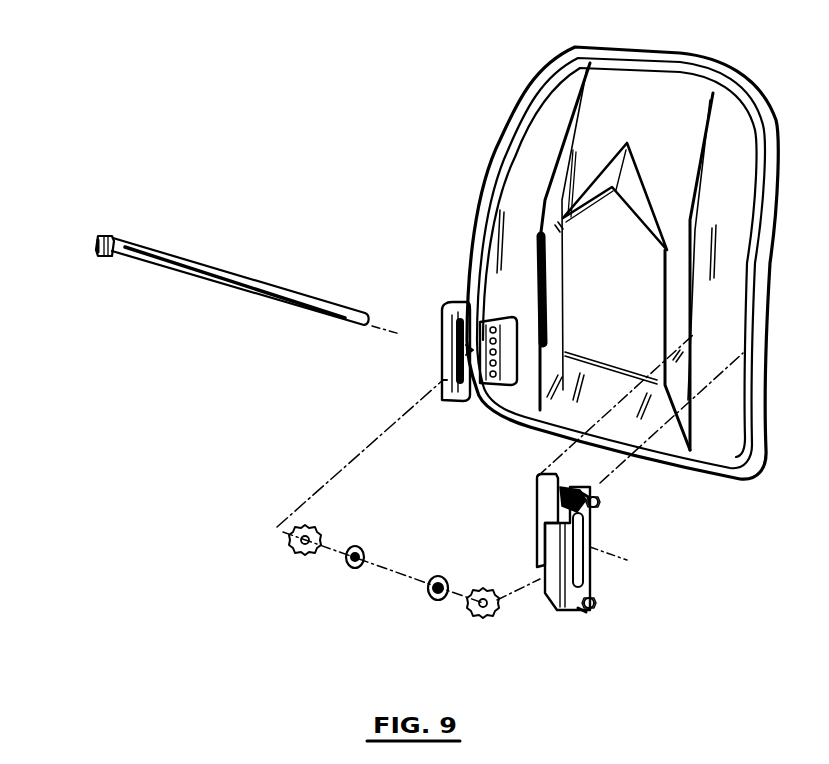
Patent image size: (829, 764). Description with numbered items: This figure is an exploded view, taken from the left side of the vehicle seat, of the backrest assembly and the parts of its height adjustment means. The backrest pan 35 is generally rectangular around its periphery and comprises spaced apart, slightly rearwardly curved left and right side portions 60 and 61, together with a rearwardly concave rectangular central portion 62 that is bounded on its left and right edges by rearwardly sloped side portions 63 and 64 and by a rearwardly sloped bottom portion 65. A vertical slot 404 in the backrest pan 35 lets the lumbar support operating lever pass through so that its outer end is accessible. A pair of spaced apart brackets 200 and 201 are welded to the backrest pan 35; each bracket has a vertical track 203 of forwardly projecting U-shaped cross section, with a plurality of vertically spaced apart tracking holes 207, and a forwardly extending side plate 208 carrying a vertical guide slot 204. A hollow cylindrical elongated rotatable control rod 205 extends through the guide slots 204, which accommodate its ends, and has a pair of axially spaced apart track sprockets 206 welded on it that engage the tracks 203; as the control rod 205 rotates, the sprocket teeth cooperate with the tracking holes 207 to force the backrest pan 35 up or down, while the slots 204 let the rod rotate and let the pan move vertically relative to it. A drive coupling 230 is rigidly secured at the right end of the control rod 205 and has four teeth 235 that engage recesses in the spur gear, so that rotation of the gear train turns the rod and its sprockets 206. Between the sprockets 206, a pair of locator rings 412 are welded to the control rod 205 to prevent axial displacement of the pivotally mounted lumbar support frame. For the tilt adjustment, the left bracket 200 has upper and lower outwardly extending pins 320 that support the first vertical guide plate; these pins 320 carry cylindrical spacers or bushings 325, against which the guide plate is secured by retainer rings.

The backrest pan 35 is at (650, 75).
The left side portion 60 is at (717, 268).
The right side portion 61 is at (502, 225).
The central portion 62 is at (607, 280).
The side portion 63 is at (690, 153).
The side portion 64 is at (567, 127).
The bottom portion 65 is at (570, 392).
The vertical slot 404 is at (545, 263).
The control rod 205 is at (192, 263).
The drive coupling 230 is at (112, 236).
The teeth 235 is at (97, 250).
The vertical guide slot 204 is at (447, 310).
The side plate 208 is at (452, 307).
The bracket 201 is at (447, 397).
The tracking holes 207 is at (494, 383).
The track sprockets 206 is at (303, 557).
The locator rings 412 is at (428, 590).
The vertical track 203 is at (537, 485).
The bracket 200 is at (590, 577).
The pins 320 is at (600, 510).
The bushing 325 is at (587, 497).